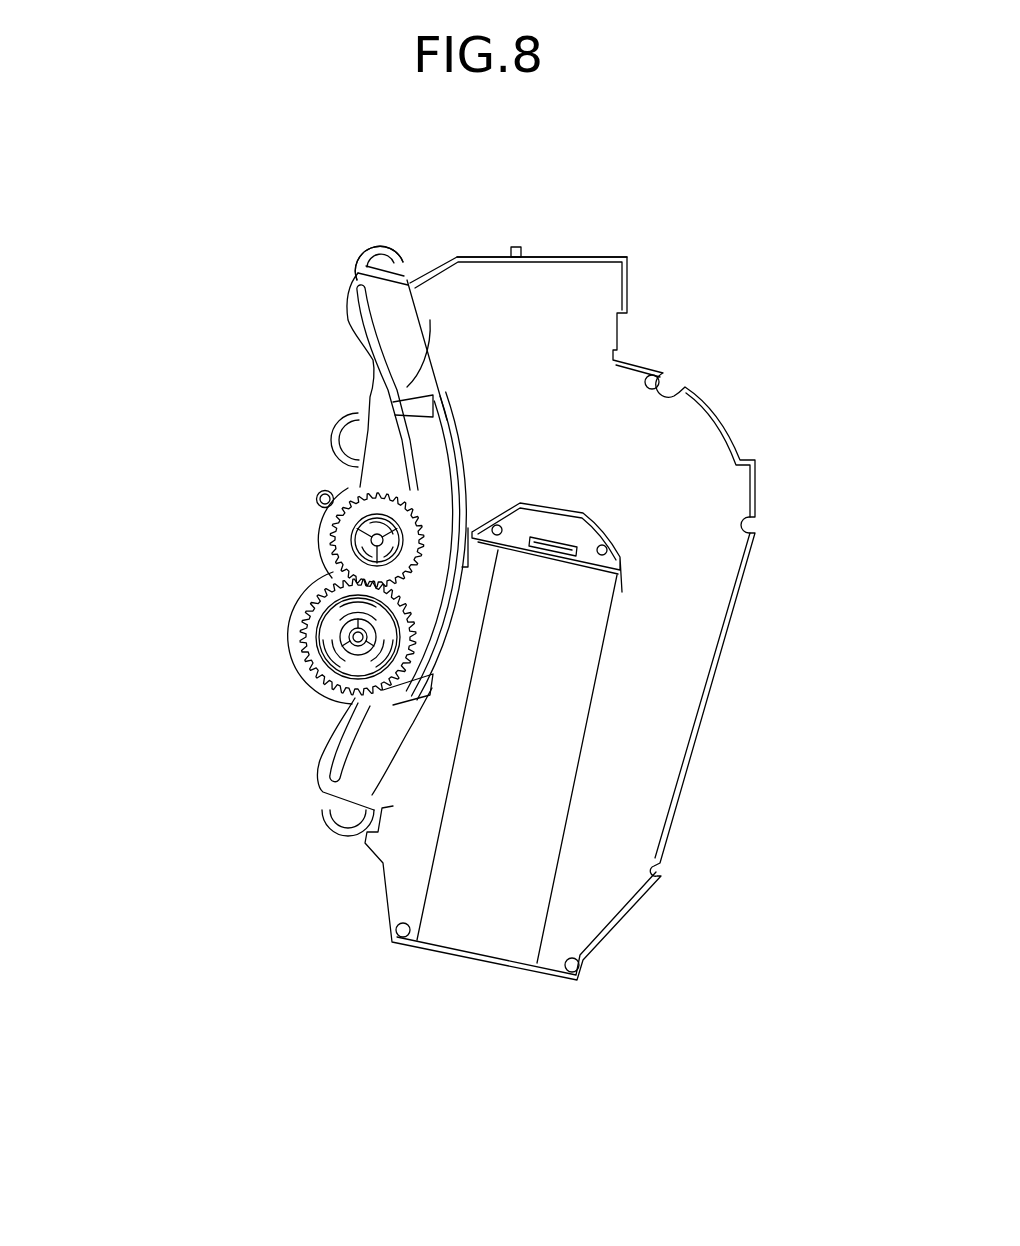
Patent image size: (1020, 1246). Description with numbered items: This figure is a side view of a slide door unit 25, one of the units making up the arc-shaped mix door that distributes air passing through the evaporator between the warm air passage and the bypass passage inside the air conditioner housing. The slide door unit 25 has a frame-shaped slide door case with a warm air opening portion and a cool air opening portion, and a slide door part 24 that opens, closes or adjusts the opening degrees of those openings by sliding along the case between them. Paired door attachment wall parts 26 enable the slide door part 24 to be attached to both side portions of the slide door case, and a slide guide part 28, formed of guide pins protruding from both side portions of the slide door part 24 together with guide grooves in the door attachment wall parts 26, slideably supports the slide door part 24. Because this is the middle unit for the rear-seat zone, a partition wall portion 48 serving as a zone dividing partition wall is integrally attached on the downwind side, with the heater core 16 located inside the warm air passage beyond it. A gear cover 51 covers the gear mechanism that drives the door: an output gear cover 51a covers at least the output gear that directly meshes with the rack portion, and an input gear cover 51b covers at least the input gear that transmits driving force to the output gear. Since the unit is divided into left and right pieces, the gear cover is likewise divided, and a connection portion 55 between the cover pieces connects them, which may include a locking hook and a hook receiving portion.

The heater core 16 is at (475, 917).
The slide door part 24 is at (460, 453).
The slide door unit 25 is at (234, 337).
The door attachment wall part 26 is at (385, 297).
The slide guide part 28 is at (428, 335).
The partition wall portion 48 is at (522, 228).
The gear cover 51 is at (263, 598).
The output gear cover 51a is at (302, 542).
The input gear cover 51b is at (277, 617).
The connection portion 55 is at (313, 535).